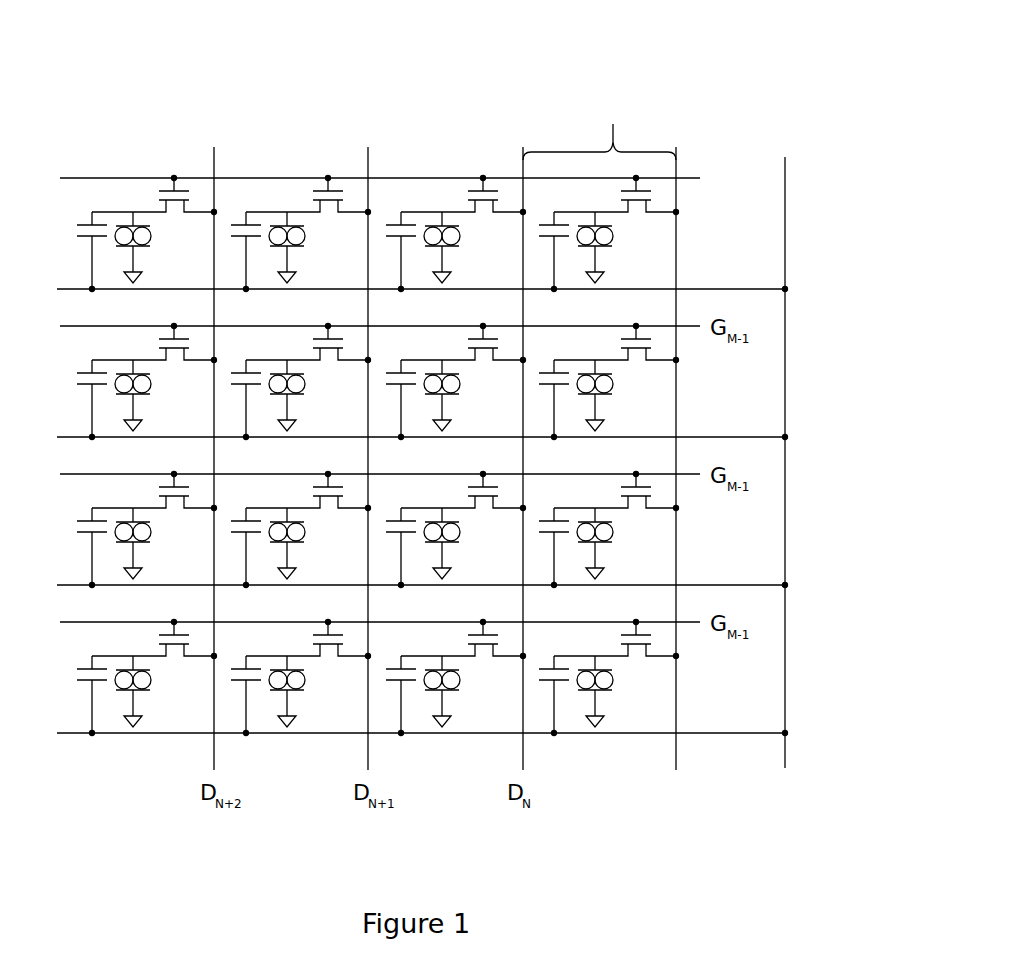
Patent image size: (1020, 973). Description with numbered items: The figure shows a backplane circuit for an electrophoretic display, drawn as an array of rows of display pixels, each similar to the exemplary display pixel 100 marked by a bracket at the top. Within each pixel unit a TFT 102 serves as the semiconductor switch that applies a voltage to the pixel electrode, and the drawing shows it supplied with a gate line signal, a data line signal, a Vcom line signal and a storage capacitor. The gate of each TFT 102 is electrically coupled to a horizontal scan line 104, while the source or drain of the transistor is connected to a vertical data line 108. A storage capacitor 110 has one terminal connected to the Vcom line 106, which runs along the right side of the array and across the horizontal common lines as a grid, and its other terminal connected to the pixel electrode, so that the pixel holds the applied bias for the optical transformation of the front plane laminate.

The display pixel 100 is at (613, 124).
The TFT 102 is at (640, 190).
The scan line 104 is at (700, 178).
The Vcom line 106 is at (785, 768).
The data line 108 is at (676, 768).
The storage capacitor 110 is at (551, 227).